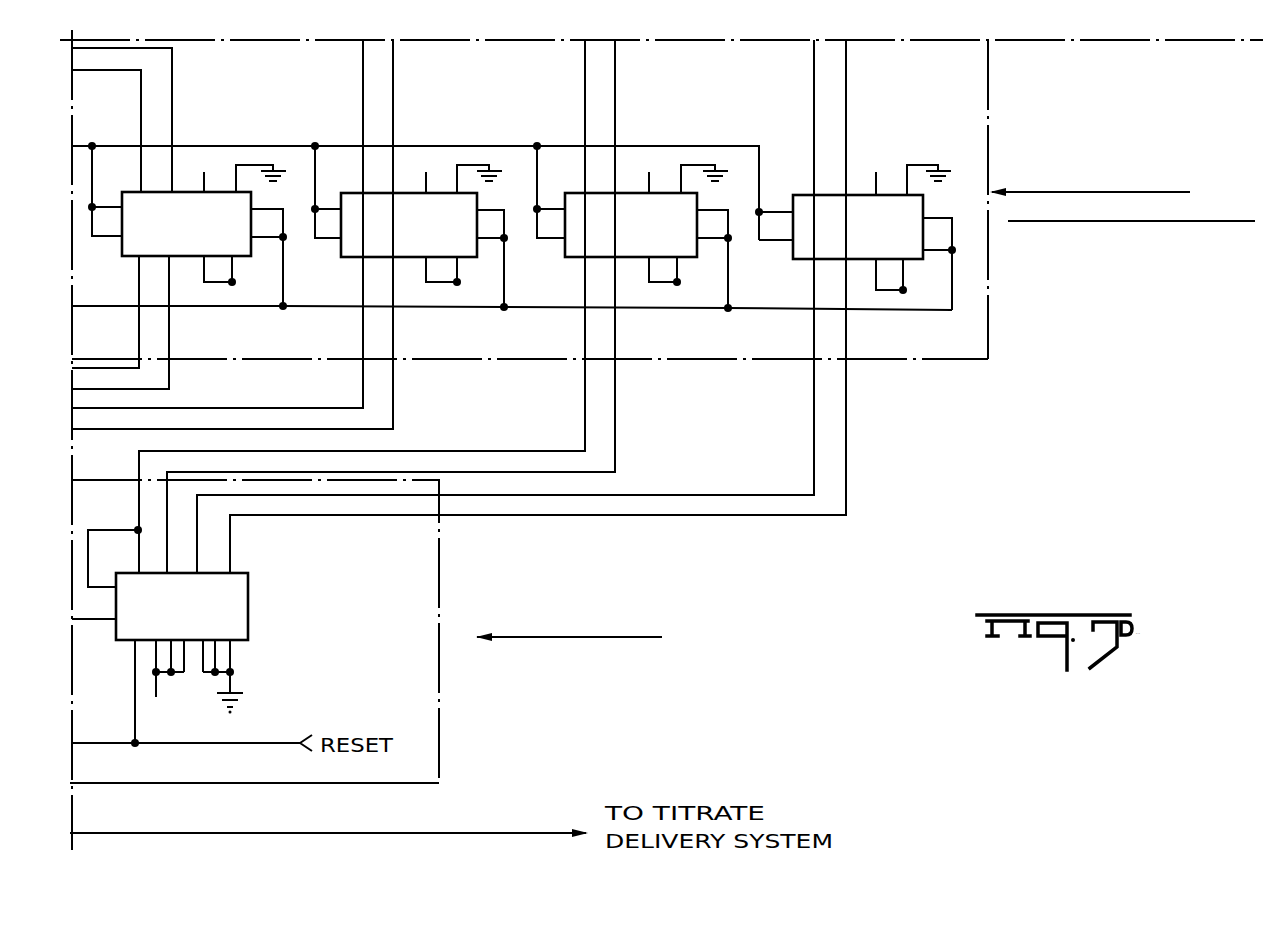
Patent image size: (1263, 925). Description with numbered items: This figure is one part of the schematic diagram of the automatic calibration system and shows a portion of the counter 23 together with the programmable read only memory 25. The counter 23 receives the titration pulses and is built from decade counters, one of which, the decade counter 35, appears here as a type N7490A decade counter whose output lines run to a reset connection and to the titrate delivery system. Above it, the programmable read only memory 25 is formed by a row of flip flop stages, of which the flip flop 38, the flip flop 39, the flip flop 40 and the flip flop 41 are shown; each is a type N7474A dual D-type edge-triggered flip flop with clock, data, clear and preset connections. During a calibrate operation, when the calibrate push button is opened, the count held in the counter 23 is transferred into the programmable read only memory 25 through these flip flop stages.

The counter 23 is at (439, 692).
The programmable read only memory 25 is at (989, 297).
The decade counter 35 is at (248, 619).
The flip flop 38 is at (136, 190).
The flip flop 39 is at (358, 192).
The flip flop 40 is at (580, 192).
The flip flop 41 is at (810, 195).